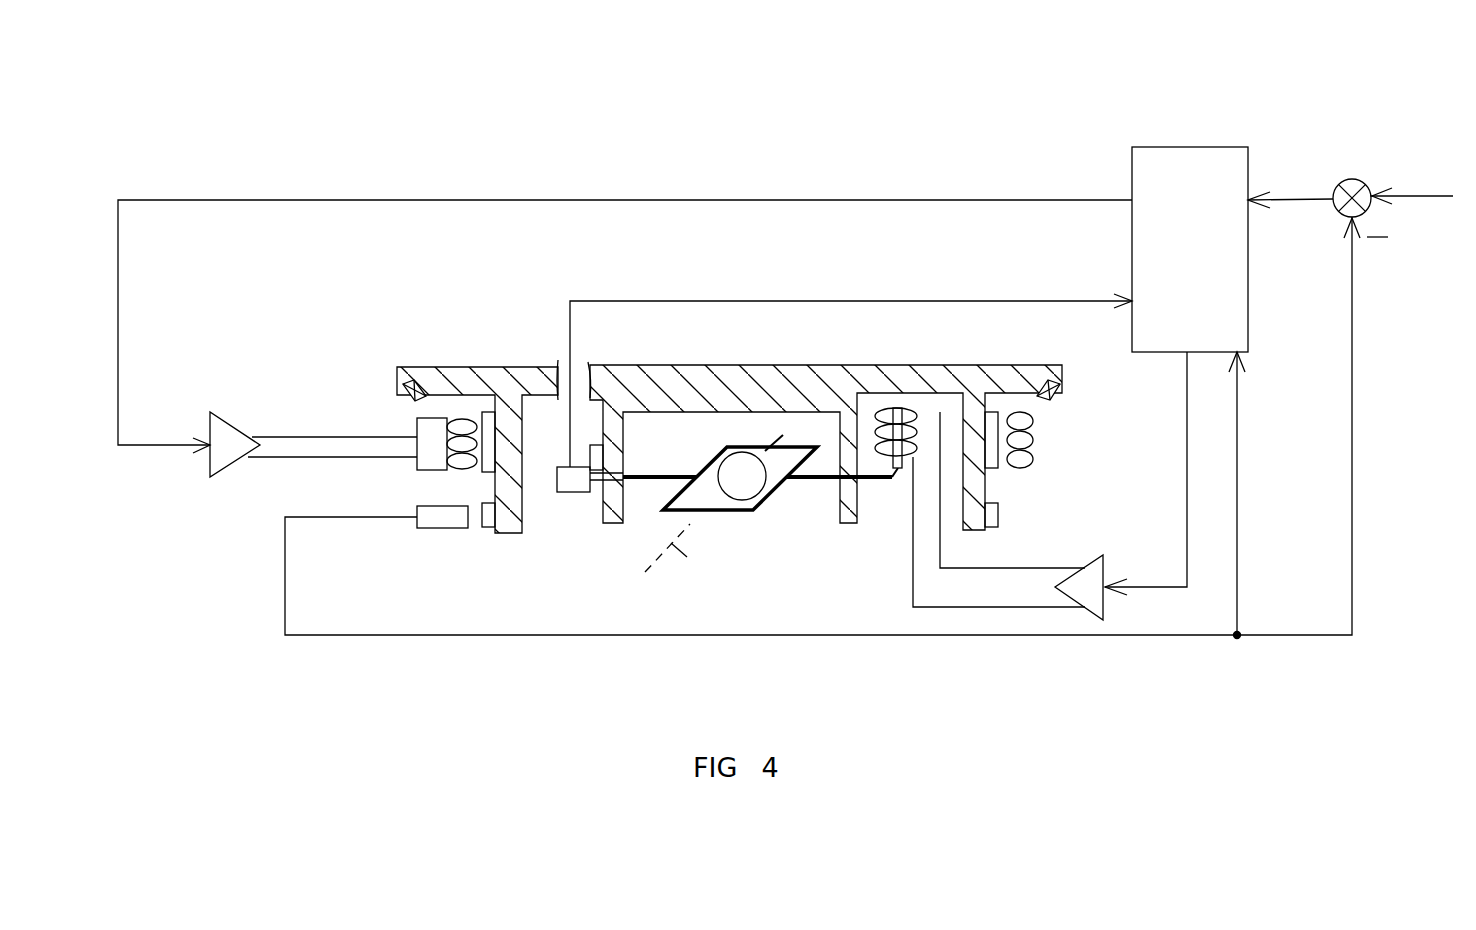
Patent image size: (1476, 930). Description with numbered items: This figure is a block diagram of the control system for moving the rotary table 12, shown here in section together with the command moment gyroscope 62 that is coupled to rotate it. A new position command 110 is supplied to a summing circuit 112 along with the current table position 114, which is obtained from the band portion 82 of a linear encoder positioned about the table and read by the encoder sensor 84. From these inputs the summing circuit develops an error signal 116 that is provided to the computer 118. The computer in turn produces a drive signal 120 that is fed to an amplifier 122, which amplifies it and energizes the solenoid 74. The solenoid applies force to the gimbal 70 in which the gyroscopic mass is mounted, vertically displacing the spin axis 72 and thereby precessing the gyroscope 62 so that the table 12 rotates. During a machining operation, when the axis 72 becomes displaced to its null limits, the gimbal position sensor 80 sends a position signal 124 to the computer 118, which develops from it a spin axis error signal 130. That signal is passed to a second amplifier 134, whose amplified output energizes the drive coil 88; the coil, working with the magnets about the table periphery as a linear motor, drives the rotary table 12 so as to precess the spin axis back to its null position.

The rotary table 12 is at (757, 365).
The command moment gyroscope 62 is at (663, 510).
The gimbal 70 is at (763, 497).
The axis of gyroscopic mass 72 is at (686, 557).
The solenoid 74 is at (895, 496).
The gimbal position sensor 80 is at (567, 492).
The band portion of linear encoder 82 is at (482, 525).
The encoder sensor 84 is at (428, 538).
The drive coil 88 is at (430, 478).
The new position command 110 is at (1435, 195).
The summing circuit 112 is at (1352, 179).
The current table position 114 is at (1352, 323).
The error signal 116 is at (1292, 200).
The computer 118 is at (1187, 147).
The drive signal 120 is at (1187, 450).
The amplifier 122 is at (1103, 608).
The position signal 124 is at (938, 298).
The spin axis error signal 130 is at (917, 198).
The amplifier 134 is at (227, 418).